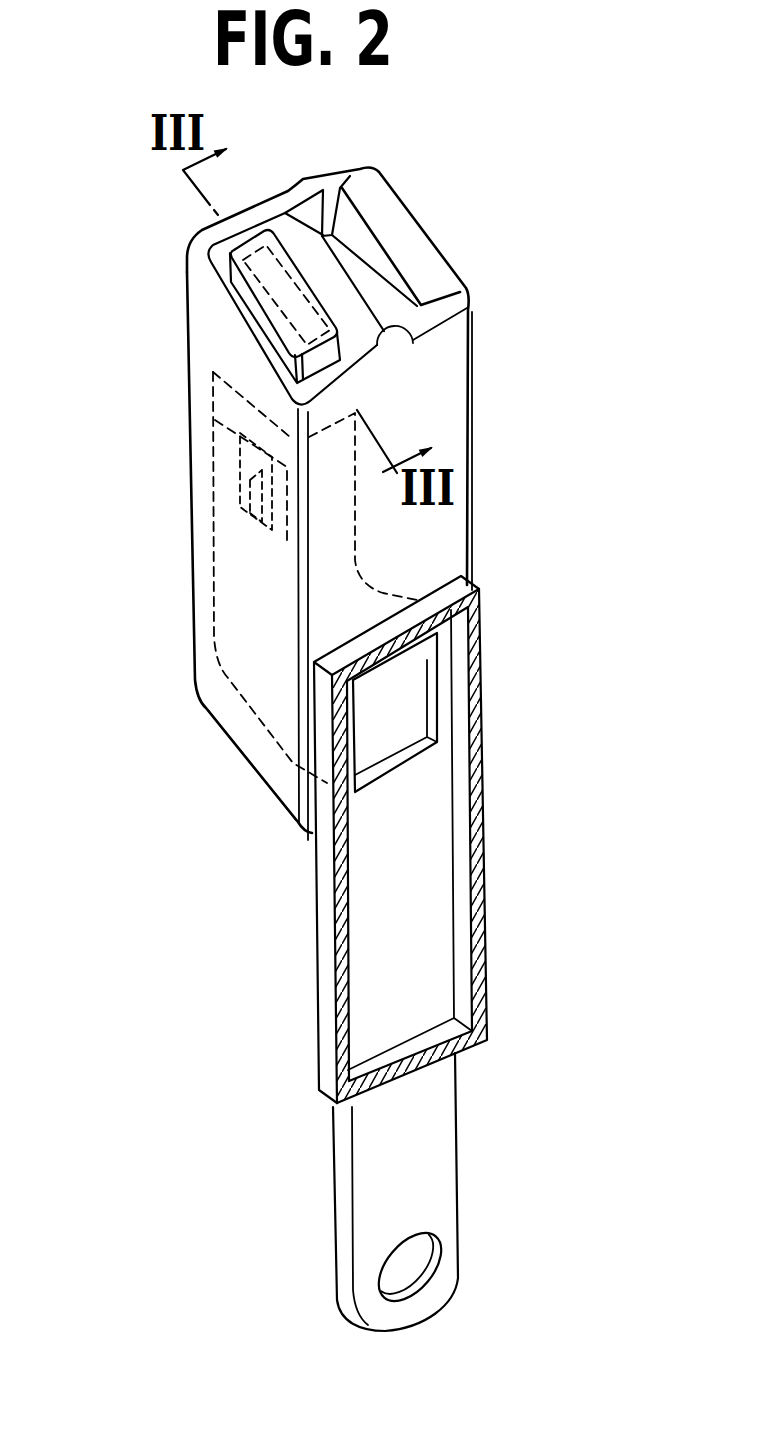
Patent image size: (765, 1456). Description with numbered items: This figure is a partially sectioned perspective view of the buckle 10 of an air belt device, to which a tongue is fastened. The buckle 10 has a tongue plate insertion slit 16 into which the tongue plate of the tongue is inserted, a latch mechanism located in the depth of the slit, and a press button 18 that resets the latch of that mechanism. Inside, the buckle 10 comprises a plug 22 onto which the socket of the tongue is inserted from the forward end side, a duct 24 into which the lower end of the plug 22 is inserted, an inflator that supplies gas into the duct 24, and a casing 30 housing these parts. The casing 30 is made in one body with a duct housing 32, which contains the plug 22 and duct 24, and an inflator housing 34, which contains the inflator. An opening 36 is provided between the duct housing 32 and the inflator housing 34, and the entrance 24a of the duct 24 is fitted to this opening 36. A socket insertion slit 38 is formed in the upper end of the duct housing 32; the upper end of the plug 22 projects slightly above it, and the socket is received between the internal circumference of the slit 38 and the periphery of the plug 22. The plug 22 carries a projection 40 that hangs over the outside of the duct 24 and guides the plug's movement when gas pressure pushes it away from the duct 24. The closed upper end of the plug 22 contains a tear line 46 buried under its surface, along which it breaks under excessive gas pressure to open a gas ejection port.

The buckle 10 is at (486, 436).
The tongue plate insertion slit 16 is at (368, 294).
The press button 18 is at (397, 193).
The plug 22 is at (230, 284).
The duct 24 is at (212, 608).
The entrance of the duct 24a is at (388, 738).
The casing 30 is at (172, 700).
The duct housing 32 is at (250, 769).
The inflator housing 34 is at (313, 975).
The opening 36 is at (418, 692).
The socket insertion slit 38 is at (207, 258).
The projection 40 is at (233, 487).
The tear line 46 is at (225, 322).